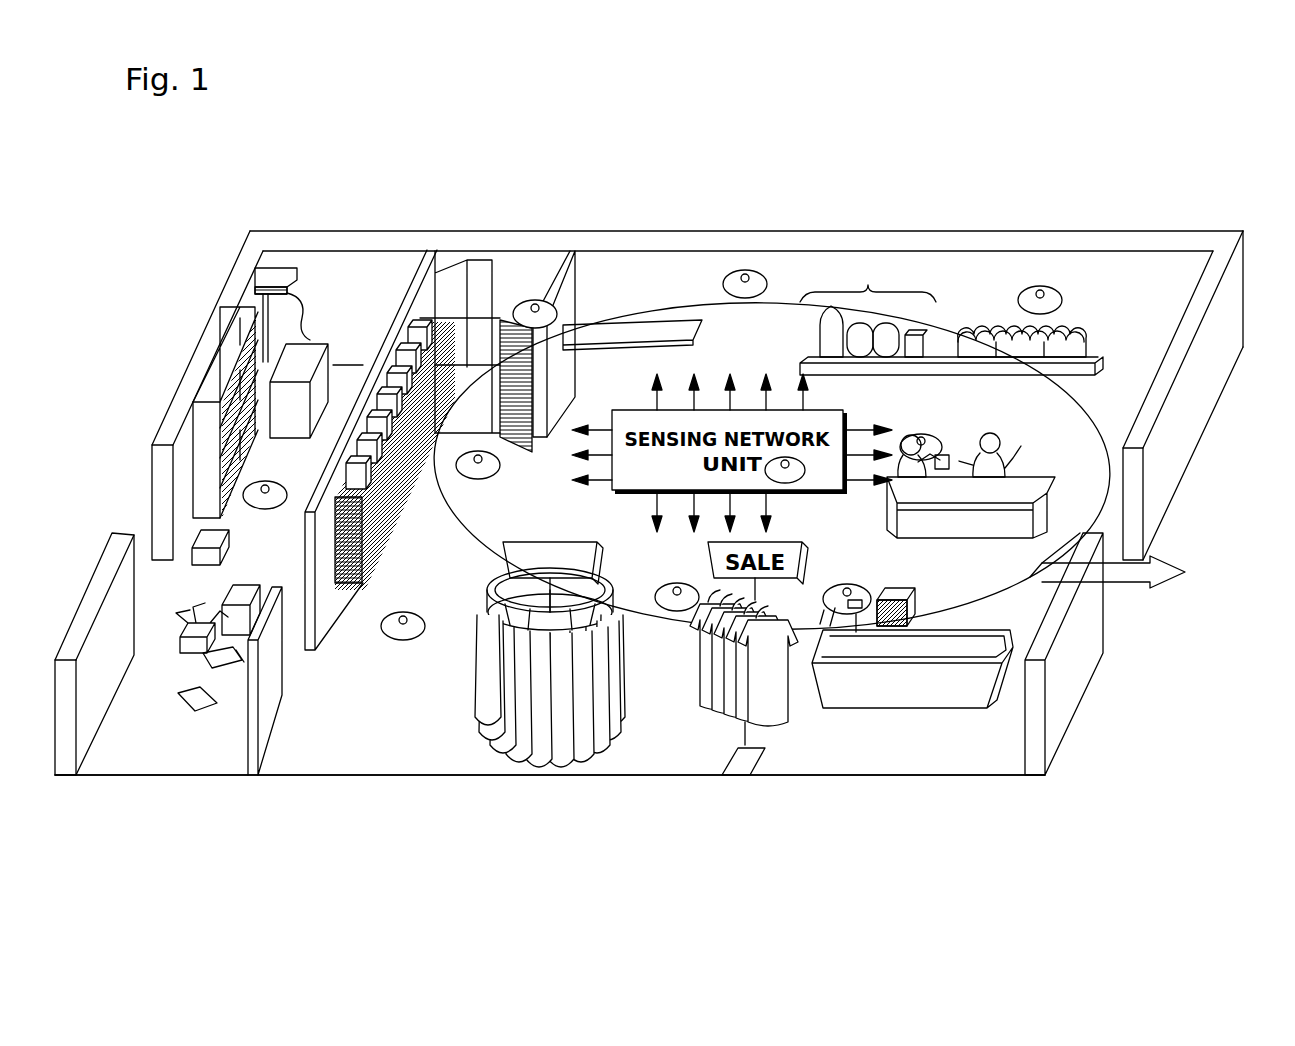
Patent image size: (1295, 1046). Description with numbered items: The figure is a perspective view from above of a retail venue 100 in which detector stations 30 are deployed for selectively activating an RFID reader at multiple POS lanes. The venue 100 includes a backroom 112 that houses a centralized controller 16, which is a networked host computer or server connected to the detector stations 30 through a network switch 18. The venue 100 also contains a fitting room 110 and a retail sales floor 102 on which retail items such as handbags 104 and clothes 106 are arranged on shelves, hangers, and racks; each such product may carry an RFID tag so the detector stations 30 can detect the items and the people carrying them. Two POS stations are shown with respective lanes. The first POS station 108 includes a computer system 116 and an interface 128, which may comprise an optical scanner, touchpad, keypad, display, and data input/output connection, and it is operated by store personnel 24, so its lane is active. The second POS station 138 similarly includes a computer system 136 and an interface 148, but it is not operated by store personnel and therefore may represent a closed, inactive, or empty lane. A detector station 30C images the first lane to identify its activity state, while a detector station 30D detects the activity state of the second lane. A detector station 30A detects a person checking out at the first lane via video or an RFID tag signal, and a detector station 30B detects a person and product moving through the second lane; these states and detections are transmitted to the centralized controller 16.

The retail venue 100 is at (184, 212).
The network switch 18 is at (297, 272).
The centralized controller 16 is at (314, 349).
The fitting room 110 is at (518, 265).
The detector stations 30 is at (555, 304).
The handbags 104 is at (951, 319).
The computer system 116 is at (945, 454).
The interface 128 is at (915, 436).
The store personnel 24 is at (1003, 442).
The POS station 108 is at (1027, 463).
The detector station 30C is at (800, 481).
The detector station 30A is at (895, 461).
The interface 148 is at (843, 597).
The computer system 136 is at (893, 594).
The POS station 138 is at (946, 623).
The detector station 30D is at (680, 611).
The detector station 30B is at (838, 625).
The clothes 106 is at (448, 740).
The retail sales floor 102 is at (330, 776).
The backroom 112 is at (166, 764).